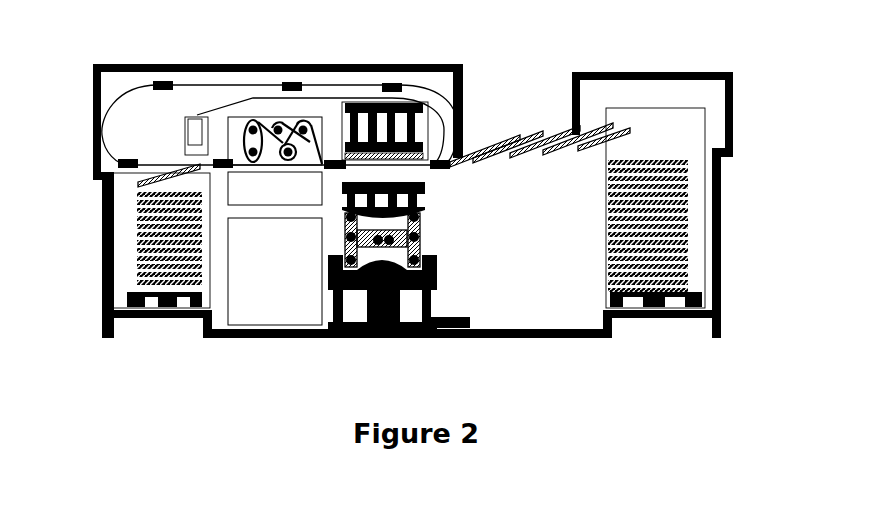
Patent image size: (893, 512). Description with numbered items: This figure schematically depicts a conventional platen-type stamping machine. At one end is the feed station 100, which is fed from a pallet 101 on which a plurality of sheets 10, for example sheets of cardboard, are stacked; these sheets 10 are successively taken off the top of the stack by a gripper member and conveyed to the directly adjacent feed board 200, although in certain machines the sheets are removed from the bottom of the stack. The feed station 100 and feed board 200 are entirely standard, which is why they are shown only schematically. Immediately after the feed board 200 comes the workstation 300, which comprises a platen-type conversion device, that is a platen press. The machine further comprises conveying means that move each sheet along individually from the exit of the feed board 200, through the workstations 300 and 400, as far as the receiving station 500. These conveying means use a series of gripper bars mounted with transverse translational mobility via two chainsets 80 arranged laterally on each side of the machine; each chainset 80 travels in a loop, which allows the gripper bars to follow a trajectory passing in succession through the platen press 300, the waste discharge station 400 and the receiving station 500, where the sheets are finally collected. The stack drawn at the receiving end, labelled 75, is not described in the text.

The chainset 80 is at (125, 100).
The receiving station 500 is at (158, 52).
The waste discharge station 400 is at (273, 50).
The workstation 300 is at (380, 50).
The feed board 200 is at (512, 120).
The feed station 100 is at (643, 62).
The pallet 101 is at (708, 305).
The sheet 10 is at (697, 193).
The input stack of sheets 75 is at (212, 178).